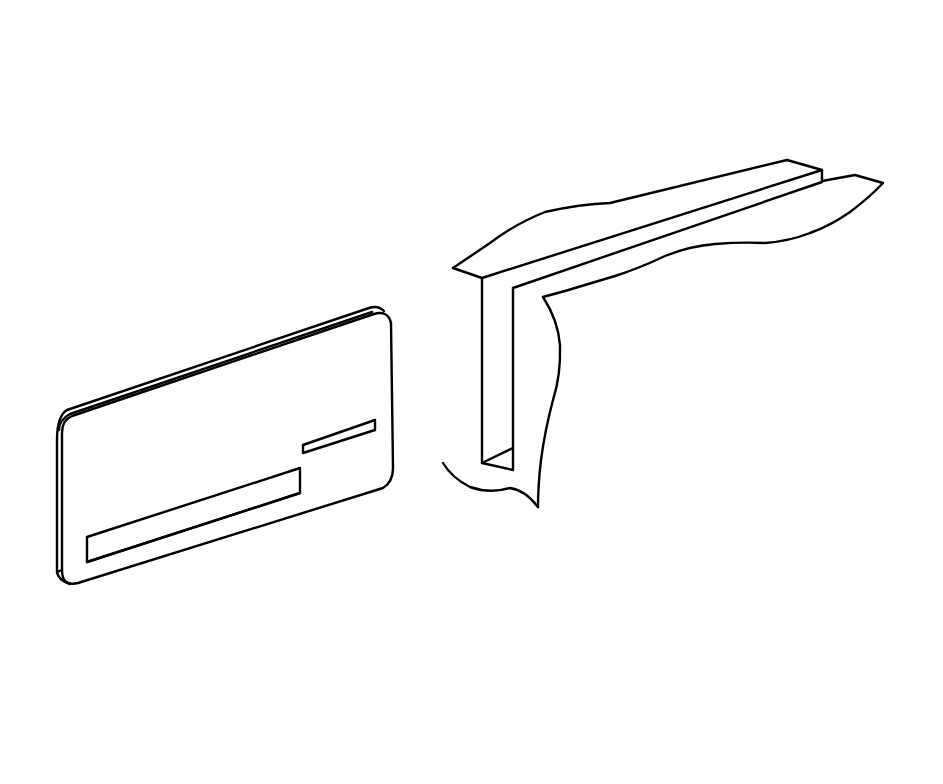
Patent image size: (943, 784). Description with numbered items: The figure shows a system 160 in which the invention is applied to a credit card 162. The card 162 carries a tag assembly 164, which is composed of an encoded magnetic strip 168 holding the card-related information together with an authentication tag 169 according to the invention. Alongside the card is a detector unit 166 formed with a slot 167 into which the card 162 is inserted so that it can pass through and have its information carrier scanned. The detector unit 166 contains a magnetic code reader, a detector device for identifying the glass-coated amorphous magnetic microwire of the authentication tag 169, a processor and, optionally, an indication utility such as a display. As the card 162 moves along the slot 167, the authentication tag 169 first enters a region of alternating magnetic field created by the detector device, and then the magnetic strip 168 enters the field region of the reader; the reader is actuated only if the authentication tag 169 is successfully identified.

The system 160 is at (358, 243).
The credit card 162 is at (195, 368).
The tag assembly 164 is at (292, 518).
The detector unit 166 is at (781, 171).
The slot 167 is at (498, 300).
The encoded magnetic strip 168 is at (193, 515).
The authentication tag 169 is at (350, 427).